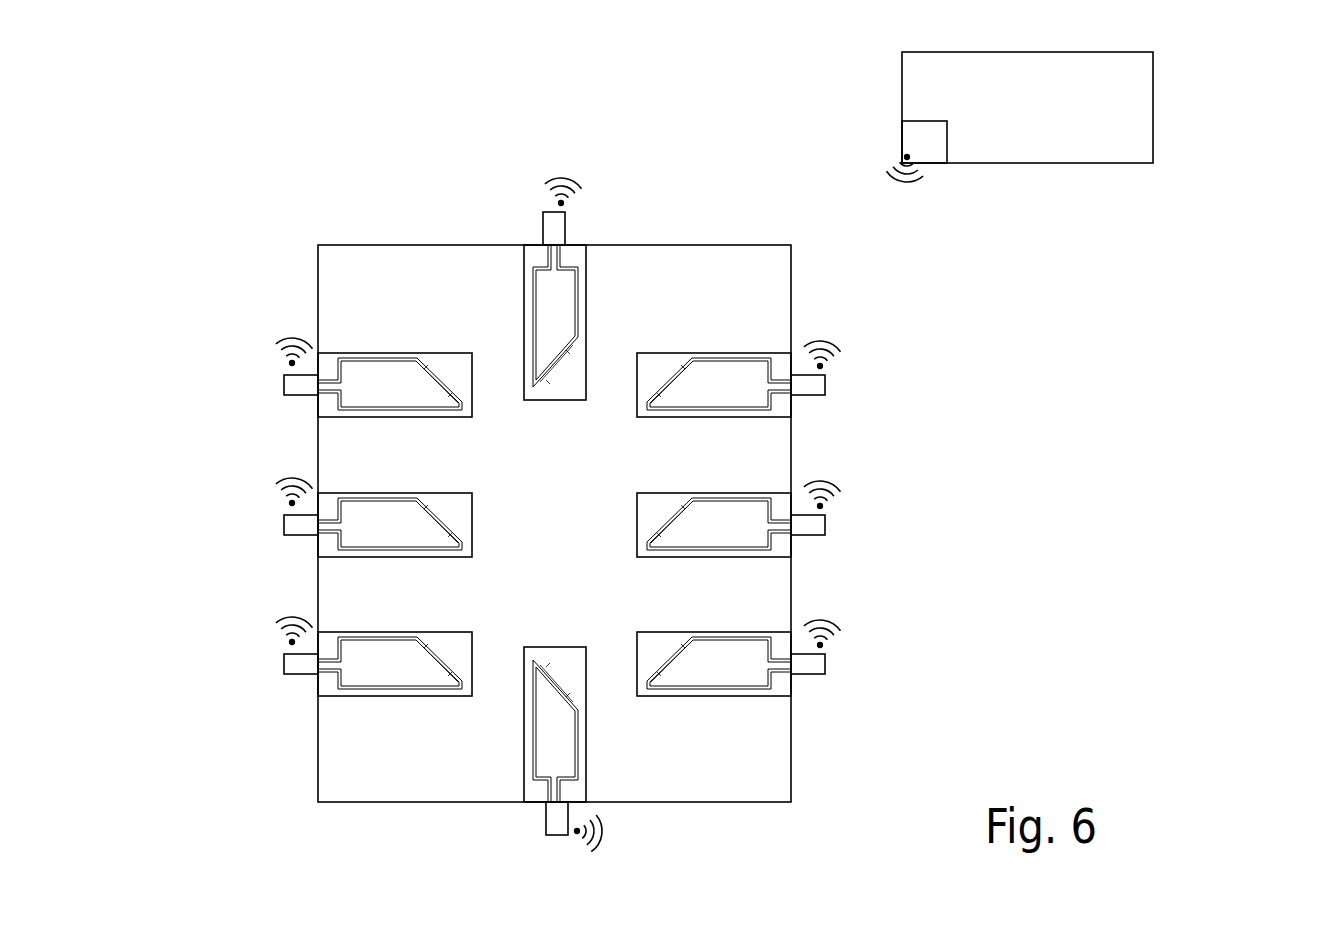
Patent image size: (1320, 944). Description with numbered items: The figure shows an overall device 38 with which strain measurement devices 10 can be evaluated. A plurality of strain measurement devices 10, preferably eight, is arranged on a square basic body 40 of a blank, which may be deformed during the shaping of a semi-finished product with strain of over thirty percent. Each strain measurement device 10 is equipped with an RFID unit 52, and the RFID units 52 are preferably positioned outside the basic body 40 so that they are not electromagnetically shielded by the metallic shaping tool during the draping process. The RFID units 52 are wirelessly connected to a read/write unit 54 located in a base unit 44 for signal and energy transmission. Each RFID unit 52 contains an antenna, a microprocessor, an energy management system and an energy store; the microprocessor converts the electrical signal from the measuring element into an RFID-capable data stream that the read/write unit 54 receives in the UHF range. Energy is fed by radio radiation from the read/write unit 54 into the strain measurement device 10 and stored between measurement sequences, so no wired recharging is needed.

The strain measurement device 10 is at (365, 375).
The overall device 38 is at (1095, 420).
The basic body 40 is at (365, 268).
The base unit 44 is at (1153, 107).
The RFID unit 52 is at (284, 385).
The read/write unit 54 is at (922, 139).